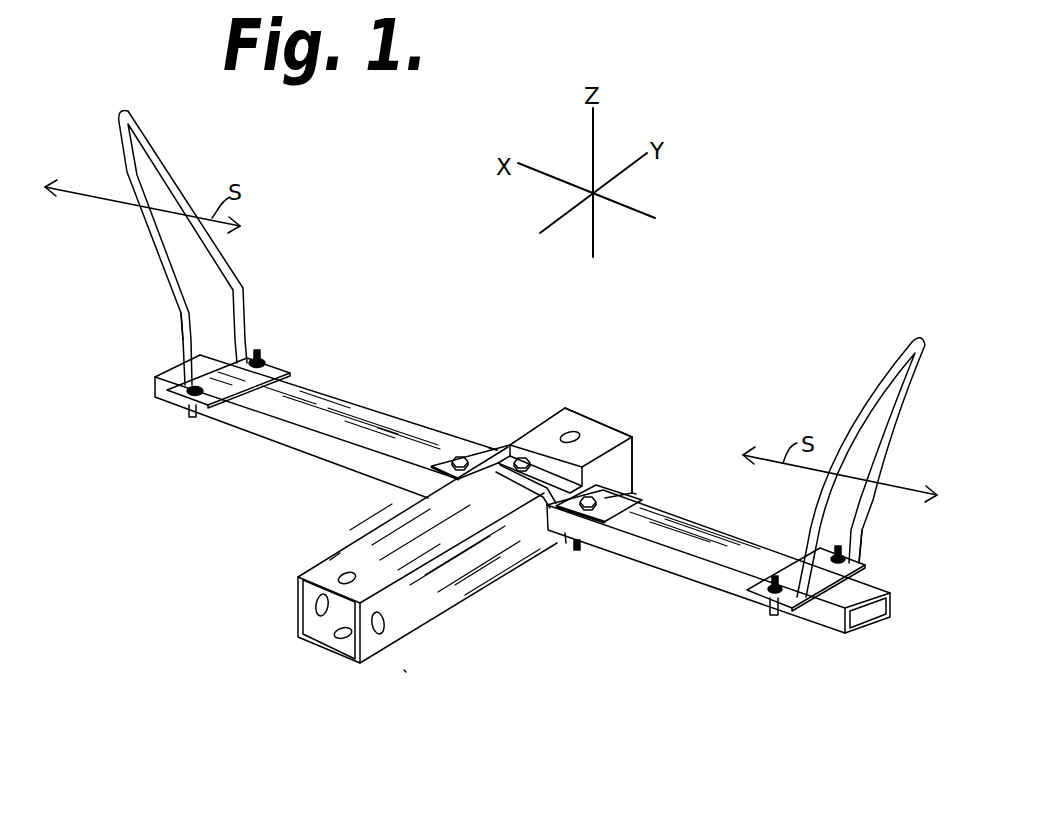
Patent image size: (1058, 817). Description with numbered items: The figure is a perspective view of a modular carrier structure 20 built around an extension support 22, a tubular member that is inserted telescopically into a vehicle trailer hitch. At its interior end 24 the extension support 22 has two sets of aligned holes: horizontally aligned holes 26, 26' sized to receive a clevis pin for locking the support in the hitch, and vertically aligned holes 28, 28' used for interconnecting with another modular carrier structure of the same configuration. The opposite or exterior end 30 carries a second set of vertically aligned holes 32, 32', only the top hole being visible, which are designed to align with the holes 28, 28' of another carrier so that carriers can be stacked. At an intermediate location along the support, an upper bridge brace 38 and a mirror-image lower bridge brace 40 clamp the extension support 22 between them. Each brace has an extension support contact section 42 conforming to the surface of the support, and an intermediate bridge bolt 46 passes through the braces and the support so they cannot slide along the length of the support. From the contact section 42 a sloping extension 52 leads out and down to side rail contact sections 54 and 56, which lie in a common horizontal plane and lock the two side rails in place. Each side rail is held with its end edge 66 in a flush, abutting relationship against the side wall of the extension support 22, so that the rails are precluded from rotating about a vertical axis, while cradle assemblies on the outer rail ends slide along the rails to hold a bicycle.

The modular carrier structure 20 is at (402, 672).
The extension support 22 is at (472, 586).
The interior end 24 is at (352, 545).
The horizontally aligned hole 26 is at (277, 635).
The horizontally aligned hole 26' is at (422, 648).
The vertically aligned hole 28 is at (283, 579).
The vertically aligned hole 28' is at (325, 675).
The exterior end 30 is at (542, 439).
The vertically aligned hole 32 is at (616, 398).
The vertically aligned hole 32' is at (537, 426).
The upper bridge brace 38 is at (506, 452).
The lower bridge brace 40 is at (557, 548).
The extension support contact section 42 is at (586, 432).
The intermediate bridge bolt 46 is at (420, 496).
The right sloping extension 52 is at (634, 472).
The side rail contact section 54 is at (470, 449).
The side rail contact section 56 is at (636, 485).
The end edge 66 is at (560, 538).